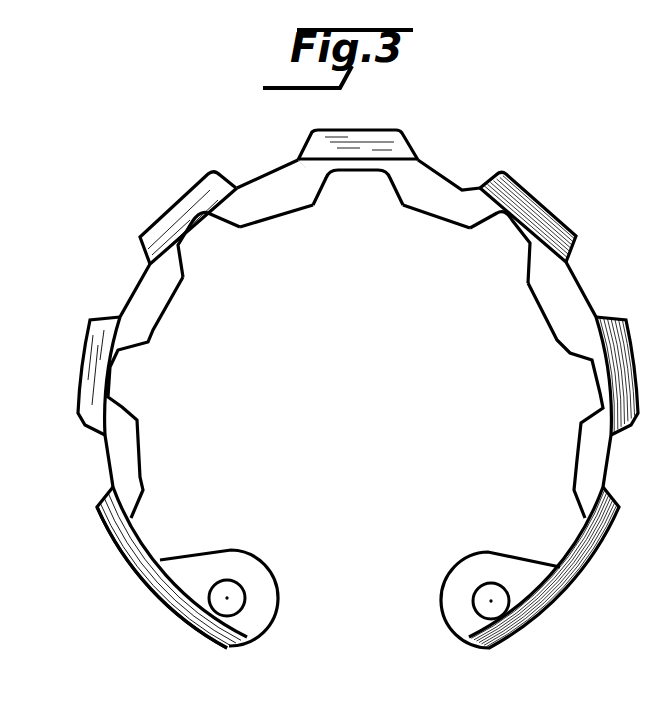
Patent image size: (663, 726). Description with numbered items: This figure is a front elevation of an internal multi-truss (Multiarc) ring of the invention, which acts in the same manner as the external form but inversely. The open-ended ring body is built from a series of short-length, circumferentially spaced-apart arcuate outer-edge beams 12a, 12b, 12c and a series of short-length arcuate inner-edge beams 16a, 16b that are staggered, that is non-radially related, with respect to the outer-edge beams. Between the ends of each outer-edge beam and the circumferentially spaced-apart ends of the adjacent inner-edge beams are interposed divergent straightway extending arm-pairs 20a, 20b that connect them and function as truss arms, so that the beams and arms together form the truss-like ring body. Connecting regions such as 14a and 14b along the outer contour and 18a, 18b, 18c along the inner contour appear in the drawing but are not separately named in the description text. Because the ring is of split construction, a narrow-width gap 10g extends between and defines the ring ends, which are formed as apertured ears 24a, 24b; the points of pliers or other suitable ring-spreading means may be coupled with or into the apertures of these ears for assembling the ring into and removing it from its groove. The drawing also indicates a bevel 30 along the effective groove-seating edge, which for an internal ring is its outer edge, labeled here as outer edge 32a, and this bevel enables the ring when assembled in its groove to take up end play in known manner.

The gap 10g is at (335, 648).
The outer-edge beam 12a is at (378, 158).
The outer-edge beam 12b is at (200, 200).
The outer-edge beam 12c is at (537, 203).
The outer edge of connecting segment 14a is at (252, 172).
The outer edge of connecting segment 14b is at (446, 158).
The inner-edge beam 16a is at (293, 200).
The inner-edge beam 16b is at (437, 207).
The inner edge of lobe 18a is at (357, 192).
The inner edge of lobe 18b is at (203, 238).
The inner edge of lobe 18c is at (513, 238).
The truss arm 20a is at (312, 176).
The truss arm 20b is at (407, 173).
The apertured ear 24a is at (240, 547).
The apertured ear 24b is at (473, 551).
The bevel 30 is at (88, 354).
The outer edge 32a is at (140, 583).